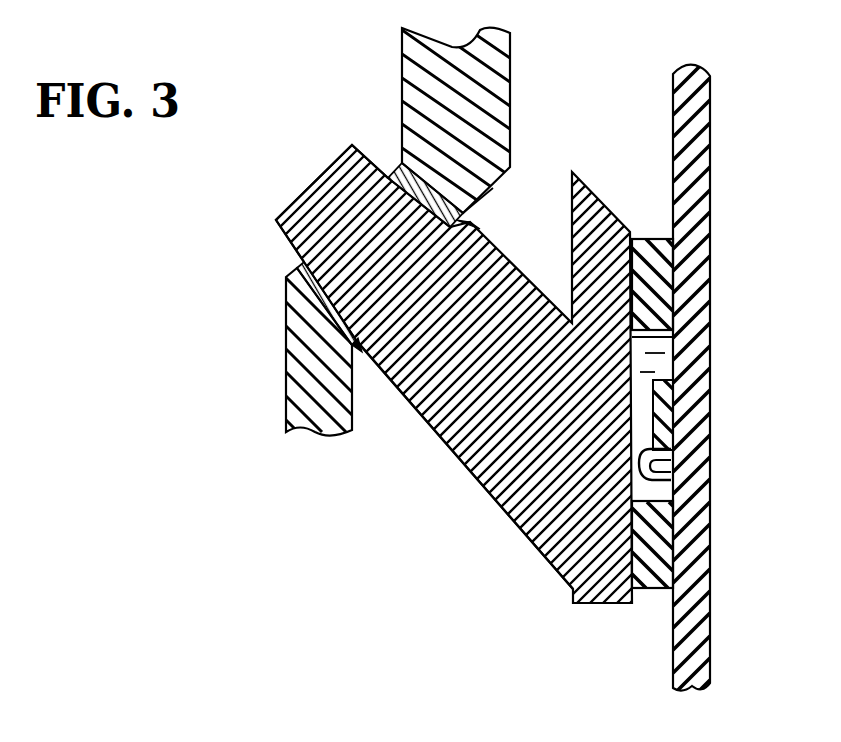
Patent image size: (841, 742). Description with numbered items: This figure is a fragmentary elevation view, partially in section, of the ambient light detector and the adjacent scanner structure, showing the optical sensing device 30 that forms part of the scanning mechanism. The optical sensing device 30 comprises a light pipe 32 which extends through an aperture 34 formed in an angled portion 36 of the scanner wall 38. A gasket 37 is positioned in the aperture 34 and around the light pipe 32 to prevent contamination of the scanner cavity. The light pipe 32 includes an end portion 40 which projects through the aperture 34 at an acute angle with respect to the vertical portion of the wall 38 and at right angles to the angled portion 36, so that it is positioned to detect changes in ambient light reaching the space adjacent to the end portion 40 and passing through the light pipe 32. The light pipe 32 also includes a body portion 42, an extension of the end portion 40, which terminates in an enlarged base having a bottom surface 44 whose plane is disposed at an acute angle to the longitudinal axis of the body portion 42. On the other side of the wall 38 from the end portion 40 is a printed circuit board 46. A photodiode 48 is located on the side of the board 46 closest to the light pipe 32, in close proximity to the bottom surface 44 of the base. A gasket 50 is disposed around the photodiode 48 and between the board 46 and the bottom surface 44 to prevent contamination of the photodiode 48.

The optical sensing device 30 is at (254, 262).
The light pipe 32 is at (505, 516).
The aperture 34 is at (390, 172).
The angled portion 36 is at (493, 188).
The gasket 37 is at (306, 293).
The scanner wall 38 is at (503, 67).
The end portion 40 is at (318, 175).
The body portion 42 is at (455, 466).
The bottom surface 44 is at (633, 498).
The printed circuit board 46 is at (712, 336).
The photodiode 48 is at (703, 478).
The gasket 50 is at (655, 239).